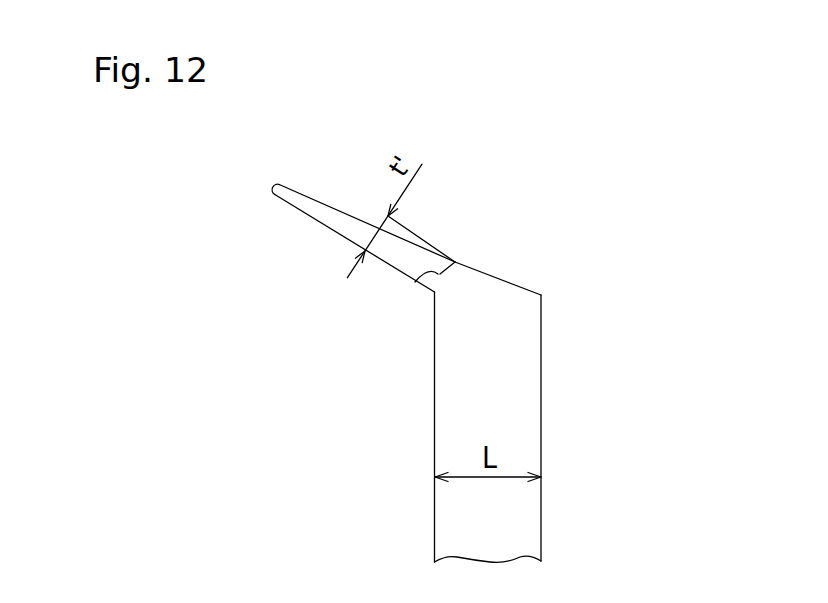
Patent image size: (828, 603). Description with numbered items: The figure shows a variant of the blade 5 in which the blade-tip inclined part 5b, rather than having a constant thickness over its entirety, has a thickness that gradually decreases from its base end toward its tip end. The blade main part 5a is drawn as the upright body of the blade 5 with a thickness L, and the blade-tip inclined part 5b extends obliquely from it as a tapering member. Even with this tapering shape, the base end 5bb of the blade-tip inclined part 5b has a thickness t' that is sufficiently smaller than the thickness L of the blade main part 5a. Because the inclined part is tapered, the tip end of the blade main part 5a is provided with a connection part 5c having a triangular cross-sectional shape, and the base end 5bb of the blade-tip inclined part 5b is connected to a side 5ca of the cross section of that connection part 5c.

The blade 5 is at (478, 384).
The blade main part 5a is at (453, 402).
The blade-tip inclined part 5b is at (384, 203).
The base end of blade-tip inclined part 5bb is at (455, 267).
The connection part 5c is at (473, 280).
The side of connection part cross section 5ca is at (417, 281).